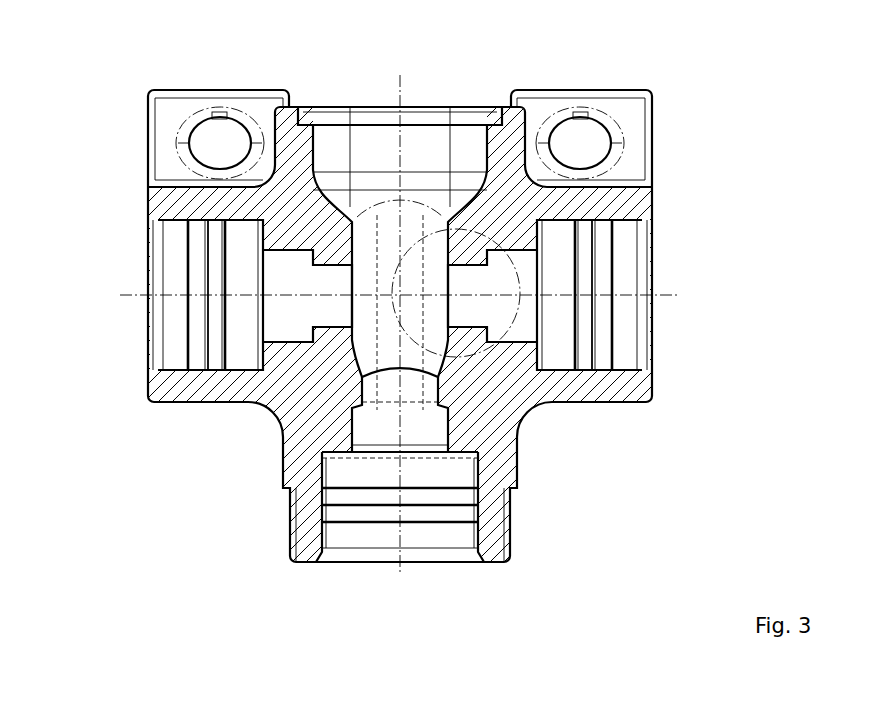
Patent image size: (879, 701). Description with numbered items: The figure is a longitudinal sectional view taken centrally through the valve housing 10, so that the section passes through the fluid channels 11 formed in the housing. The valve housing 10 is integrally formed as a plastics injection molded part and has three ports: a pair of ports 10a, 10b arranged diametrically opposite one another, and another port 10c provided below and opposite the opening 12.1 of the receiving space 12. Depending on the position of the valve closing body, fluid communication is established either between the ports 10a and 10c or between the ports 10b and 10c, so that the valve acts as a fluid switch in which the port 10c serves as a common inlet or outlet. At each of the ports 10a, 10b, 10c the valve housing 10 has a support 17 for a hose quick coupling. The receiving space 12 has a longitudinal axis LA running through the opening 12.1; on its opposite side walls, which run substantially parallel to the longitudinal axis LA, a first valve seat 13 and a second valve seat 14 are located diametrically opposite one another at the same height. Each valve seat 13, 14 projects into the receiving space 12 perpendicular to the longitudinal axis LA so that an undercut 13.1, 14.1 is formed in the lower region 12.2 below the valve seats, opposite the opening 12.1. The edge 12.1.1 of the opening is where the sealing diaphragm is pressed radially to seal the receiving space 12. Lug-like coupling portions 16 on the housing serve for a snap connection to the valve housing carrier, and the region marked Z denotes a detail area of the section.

The valve housing 10 is at (720, 135).
The port 10a is at (147, 313).
The port 10b is at (657, 285).
The port 10c is at (417, 572).
The fluid channel 11 is at (328, 313).
The receiving space 12 is at (360, 352).
The opening 12.1 is at (443, 105).
The edge of the opening 12.1.1 is at (310, 105).
The lower region 12.2 is at (452, 380).
The first valve seat 13 is at (340, 252).
The undercut 13.1 is at (335, 355).
The second valve seat 14 is at (460, 252).
The undercut 14.1 is at (465, 358).
The coupling portions 16 is at (173, 97).
The support 17 is at (173, 347).
The longitudinal axis LA is at (400, 565).
The detail region Z is at (487, 350).